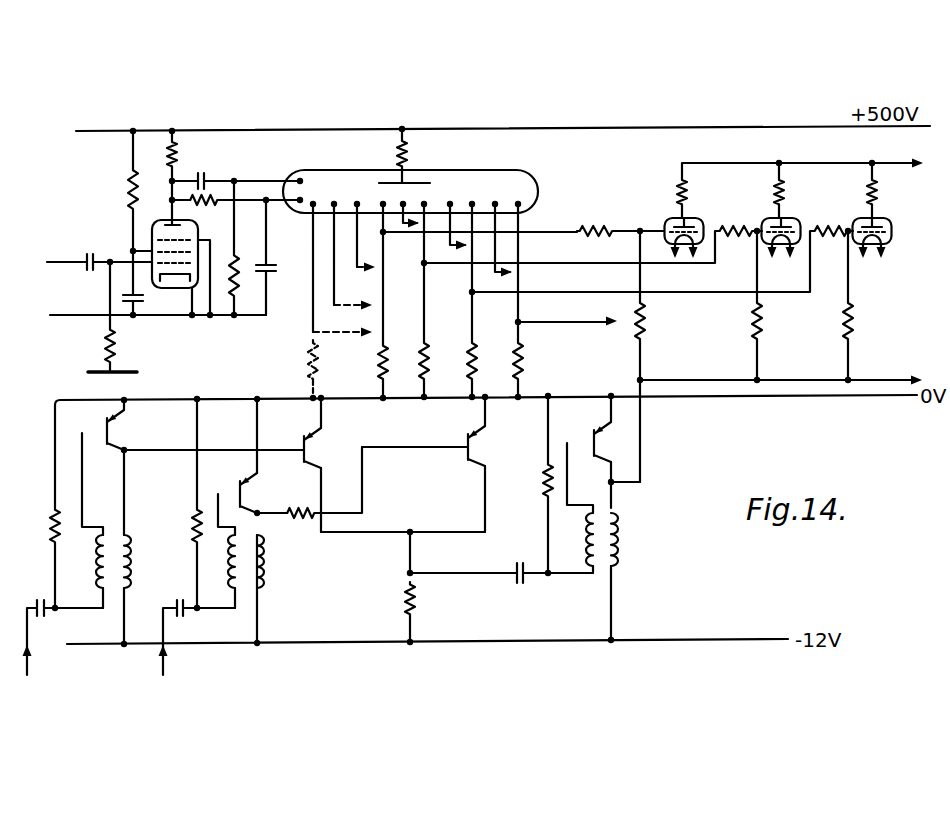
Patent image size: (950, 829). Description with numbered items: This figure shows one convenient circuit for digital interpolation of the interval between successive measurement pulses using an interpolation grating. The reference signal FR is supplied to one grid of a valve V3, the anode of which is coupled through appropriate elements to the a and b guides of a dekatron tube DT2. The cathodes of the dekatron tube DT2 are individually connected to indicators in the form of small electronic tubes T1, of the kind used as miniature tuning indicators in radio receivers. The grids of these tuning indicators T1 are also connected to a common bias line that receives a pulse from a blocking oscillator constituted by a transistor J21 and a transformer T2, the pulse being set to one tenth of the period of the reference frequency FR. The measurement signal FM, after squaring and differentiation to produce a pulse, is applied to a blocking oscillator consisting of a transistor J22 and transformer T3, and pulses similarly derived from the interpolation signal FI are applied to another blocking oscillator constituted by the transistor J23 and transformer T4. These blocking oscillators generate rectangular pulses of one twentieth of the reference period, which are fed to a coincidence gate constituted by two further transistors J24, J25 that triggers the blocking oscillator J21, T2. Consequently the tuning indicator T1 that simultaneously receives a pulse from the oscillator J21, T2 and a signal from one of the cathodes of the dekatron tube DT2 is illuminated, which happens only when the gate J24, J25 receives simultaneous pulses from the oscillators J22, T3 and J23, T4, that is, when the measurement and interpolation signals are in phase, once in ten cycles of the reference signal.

The valve V3 is at (155, 219).
The dekatron tube DT2 is at (511, 175).
The tuning indicator tube T1 is at (699, 218).
The transistor J21 is at (592, 436).
The transistor J22 is at (244, 492).
The transistor J23 is at (112, 428).
The transistor J24 is at (308, 449).
The transistor J25 is at (472, 447).
The transformer T2 is at (604, 572).
The transformer T3 is at (246, 600).
The transformer T4 is at (114, 600).
The reference signal FR is at (47, 265).
The interpolation signal FI is at (30, 672).
The measurement signal FM is at (164, 672).